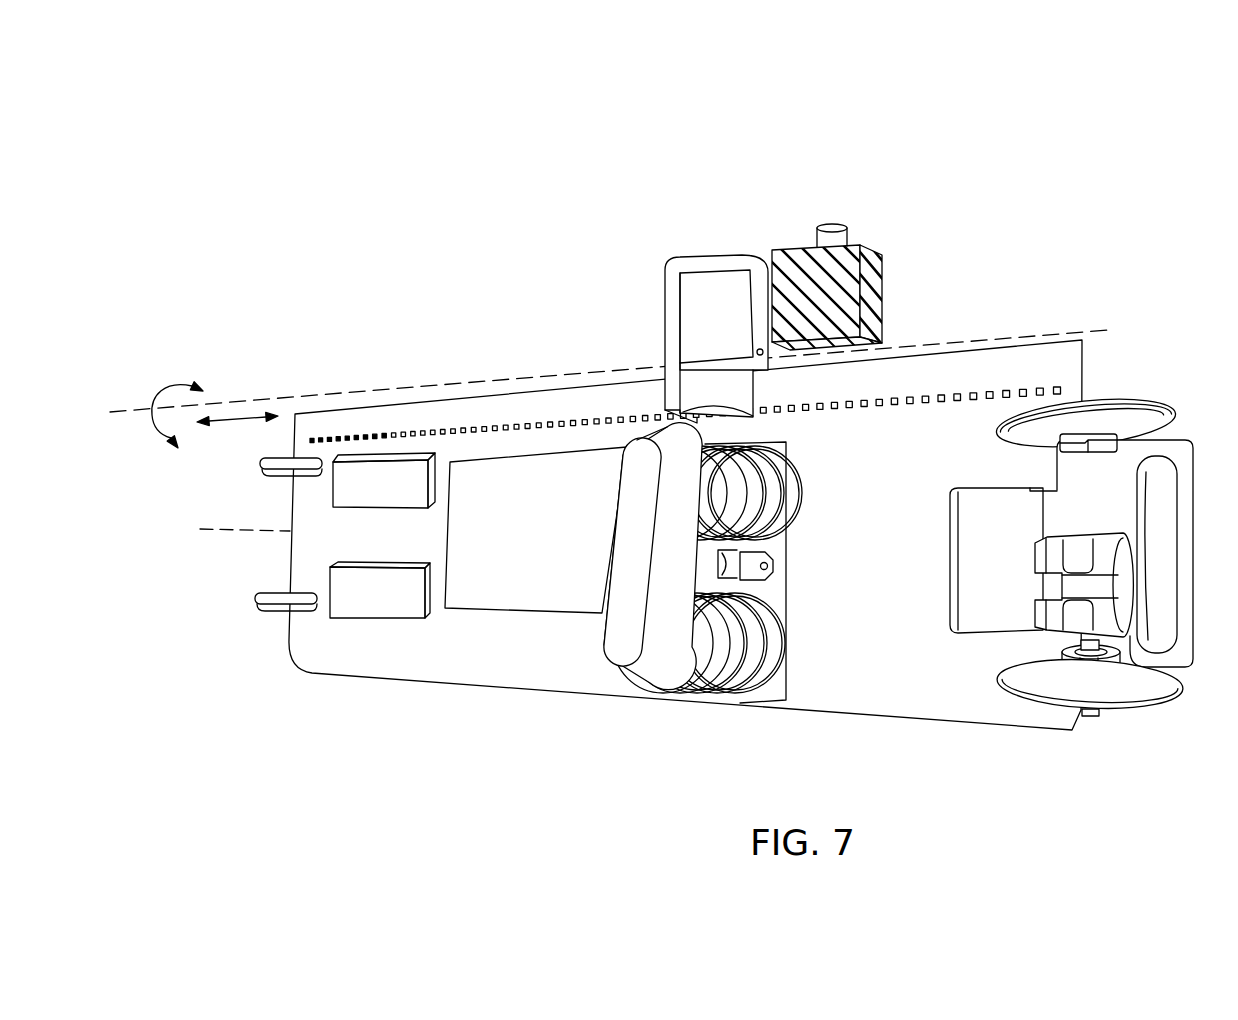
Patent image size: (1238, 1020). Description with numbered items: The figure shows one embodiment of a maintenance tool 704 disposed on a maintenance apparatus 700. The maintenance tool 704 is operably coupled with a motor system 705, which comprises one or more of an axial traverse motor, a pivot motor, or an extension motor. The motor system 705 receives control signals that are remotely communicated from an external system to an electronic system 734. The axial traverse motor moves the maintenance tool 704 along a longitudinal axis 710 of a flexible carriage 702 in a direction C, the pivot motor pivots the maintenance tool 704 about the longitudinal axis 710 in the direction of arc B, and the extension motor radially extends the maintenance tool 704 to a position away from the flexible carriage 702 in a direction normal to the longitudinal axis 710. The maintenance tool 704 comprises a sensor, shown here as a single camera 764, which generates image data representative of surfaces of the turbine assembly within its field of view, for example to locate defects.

The maintenance apparatus 700 is at (1031, 112).
The flexible carriage 702 is at (988, 706).
The maintenance tool 704 is at (771, 283).
The motor system 705 is at (664, 229).
The longitudinal axis 710 is at (326, 397).
The electronic system 734 is at (525, 488).
The camera 764 is at (838, 222).